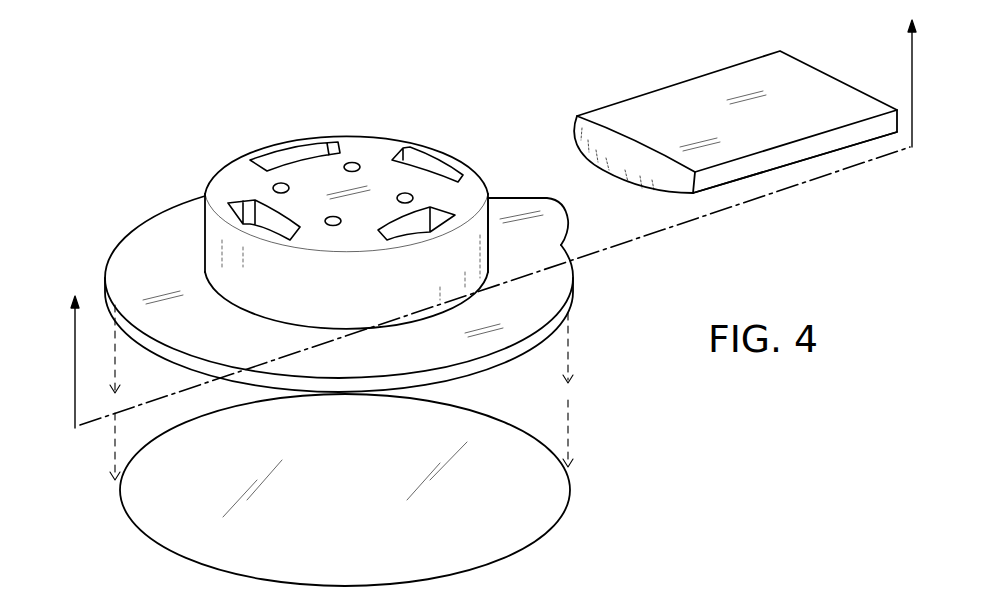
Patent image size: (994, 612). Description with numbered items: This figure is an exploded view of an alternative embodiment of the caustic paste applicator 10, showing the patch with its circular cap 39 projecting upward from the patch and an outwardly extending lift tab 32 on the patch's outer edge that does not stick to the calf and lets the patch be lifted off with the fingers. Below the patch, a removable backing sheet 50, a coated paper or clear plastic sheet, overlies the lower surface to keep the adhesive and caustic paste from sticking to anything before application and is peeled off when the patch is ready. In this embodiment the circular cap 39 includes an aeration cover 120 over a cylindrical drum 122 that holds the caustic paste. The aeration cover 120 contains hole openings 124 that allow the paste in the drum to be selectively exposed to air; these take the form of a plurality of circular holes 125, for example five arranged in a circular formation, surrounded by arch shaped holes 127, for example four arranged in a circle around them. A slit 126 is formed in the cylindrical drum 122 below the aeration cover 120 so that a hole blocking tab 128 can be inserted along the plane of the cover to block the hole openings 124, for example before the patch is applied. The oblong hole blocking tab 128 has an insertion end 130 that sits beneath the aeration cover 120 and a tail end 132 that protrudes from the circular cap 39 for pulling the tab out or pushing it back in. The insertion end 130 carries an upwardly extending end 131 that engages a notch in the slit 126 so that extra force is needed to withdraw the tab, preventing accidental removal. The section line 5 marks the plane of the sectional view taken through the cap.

The section line 5- 5 is at (493, 214).
The device assembly 10 is at (663, 302).
The lift tab 32 is at (538, 197).
The circular cap 39 is at (163, 248).
The backing sheet 50 is at (526, 513).
The aeration cover 120 is at (363, 145).
The cylindrical drum 122 is at (205, 270).
The hole openings 124 is at (362, 162).
The circular holes 125 is at (343, 162).
The slit 126 is at (492, 237).
The arch shaped holes 127 is at (243, 201).
The hole blocking tab 128 is at (710, 90).
The insertion end 130 is at (695, 164).
The upwardly extending end 131 is at (601, 136).
The tail end 132 is at (787, 72).